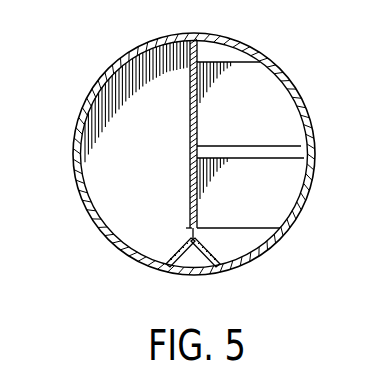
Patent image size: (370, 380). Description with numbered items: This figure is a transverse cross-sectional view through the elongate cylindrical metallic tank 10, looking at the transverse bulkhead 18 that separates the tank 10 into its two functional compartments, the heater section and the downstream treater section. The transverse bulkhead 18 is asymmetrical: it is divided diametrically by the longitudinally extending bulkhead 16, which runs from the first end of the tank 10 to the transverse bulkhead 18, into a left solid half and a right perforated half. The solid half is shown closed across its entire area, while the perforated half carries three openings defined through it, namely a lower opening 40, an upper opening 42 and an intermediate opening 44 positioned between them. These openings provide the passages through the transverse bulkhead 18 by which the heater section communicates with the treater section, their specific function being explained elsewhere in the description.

The tank 10 is at (102, 70).
The longitudinal bulkhead 16 is at (188, 118).
The transverse bulkhead 18 is at (141, 129).
The lower opening 40 is at (243, 237).
The upper opening 42 is at (222, 55).
The intermediate opening 44 is at (280, 153).